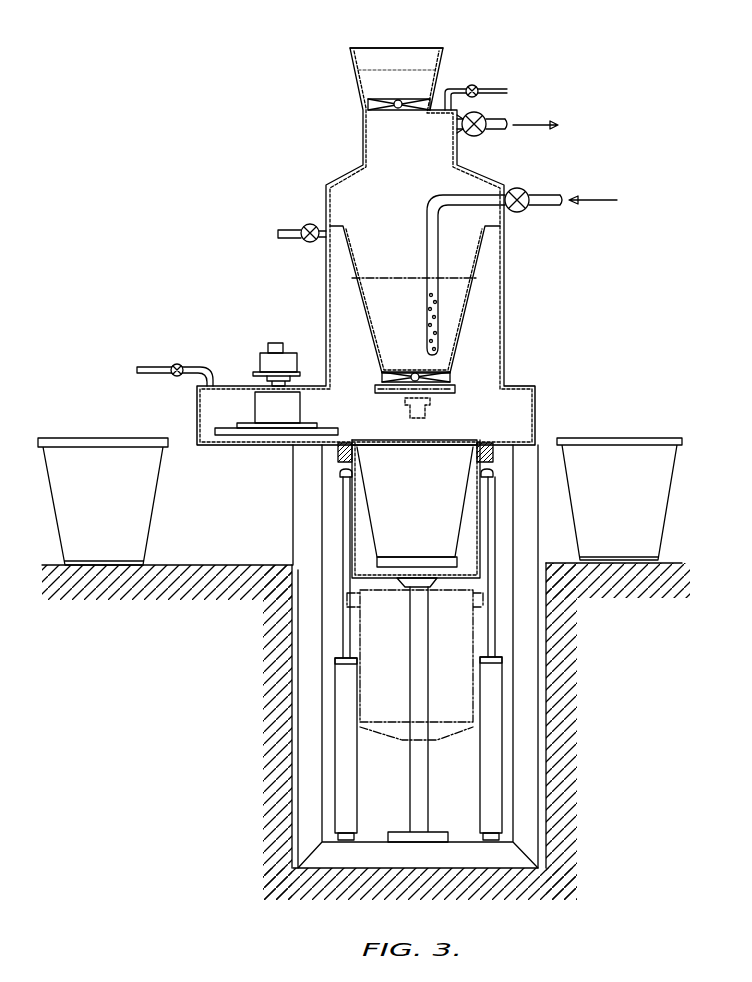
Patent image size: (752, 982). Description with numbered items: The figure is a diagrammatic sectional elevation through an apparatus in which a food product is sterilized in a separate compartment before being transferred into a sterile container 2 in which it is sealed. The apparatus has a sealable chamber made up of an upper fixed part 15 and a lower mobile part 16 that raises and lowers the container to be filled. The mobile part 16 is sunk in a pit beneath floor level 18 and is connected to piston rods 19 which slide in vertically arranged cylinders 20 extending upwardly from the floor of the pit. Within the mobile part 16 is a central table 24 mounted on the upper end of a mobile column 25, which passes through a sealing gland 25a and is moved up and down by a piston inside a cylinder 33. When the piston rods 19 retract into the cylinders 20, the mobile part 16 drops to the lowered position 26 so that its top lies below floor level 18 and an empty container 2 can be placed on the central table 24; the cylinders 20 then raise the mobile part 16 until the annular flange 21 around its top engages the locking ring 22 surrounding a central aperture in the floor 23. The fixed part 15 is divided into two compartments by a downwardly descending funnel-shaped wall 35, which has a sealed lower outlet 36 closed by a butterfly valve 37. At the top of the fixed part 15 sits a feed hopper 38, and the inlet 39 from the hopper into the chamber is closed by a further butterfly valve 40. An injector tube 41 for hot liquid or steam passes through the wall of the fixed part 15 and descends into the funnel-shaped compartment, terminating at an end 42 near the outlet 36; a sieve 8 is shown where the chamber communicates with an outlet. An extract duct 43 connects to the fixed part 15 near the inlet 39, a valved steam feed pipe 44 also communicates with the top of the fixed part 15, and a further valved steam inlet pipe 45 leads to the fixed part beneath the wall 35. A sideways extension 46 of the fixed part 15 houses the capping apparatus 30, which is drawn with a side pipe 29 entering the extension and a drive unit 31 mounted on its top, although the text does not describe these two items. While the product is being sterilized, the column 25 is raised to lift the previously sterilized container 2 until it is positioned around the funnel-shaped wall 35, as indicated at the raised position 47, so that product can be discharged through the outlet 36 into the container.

The container 2 is at (155, 505).
The sieve 8 is at (457, 128).
The upper fixed part 15 is at (504, 333).
The lower mobile part 16 is at (480, 543).
The floor level 18 is at (572, 564).
The piston rods 19 is at (343, 626).
The cylinders 20 is at (345, 796).
The annular flange 21 is at (493, 463).
The locking ring 22 is at (493, 458).
The floor 23 is at (540, 415).
The central table 24 is at (377, 565).
The mobile column 25 is at (403, 590).
The sealing gland 25a is at (432, 588).
The lowered position 26 is at (472, 729).
The supply pipe 29 is at (178, 378).
The capping apparatus 30 is at (255, 409).
The motor 31 is at (262, 345).
The cylinder 33 is at (415, 668).
The funnel-shaped wall 35 is at (480, 262).
The sealed lower outlet 36 is at (450, 375).
The butterfly valve 37 is at (433, 388).
The feed hopper 38 is at (426, 52).
The inlet 39 is at (366, 103).
The further butterfly valve 40 is at (390, 98).
The injector tube 41 is at (547, 193).
The injector tube end 42 is at (452, 350).
The extract duct 43 is at (500, 115).
The valved steam feed pipe 44 is at (492, 88).
The further valved steam inlet pipe 45 is at (296, 230).
The sideways extension 46 is at (197, 420).
The raised container position 47 is at (467, 315).